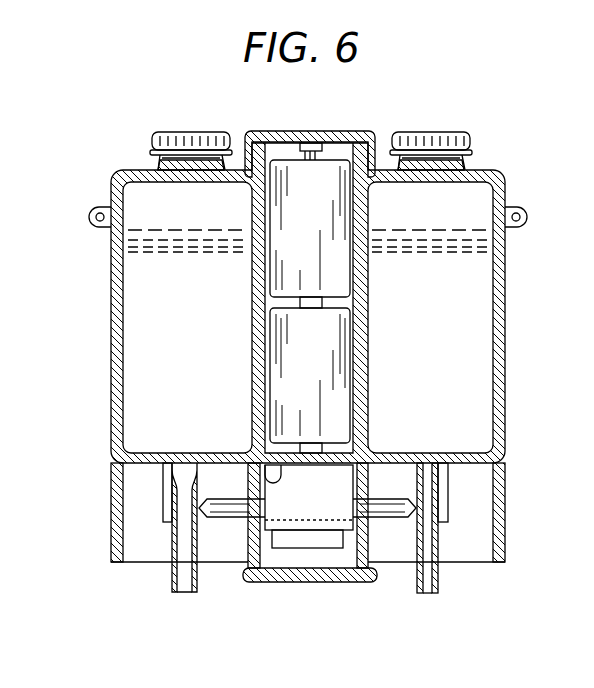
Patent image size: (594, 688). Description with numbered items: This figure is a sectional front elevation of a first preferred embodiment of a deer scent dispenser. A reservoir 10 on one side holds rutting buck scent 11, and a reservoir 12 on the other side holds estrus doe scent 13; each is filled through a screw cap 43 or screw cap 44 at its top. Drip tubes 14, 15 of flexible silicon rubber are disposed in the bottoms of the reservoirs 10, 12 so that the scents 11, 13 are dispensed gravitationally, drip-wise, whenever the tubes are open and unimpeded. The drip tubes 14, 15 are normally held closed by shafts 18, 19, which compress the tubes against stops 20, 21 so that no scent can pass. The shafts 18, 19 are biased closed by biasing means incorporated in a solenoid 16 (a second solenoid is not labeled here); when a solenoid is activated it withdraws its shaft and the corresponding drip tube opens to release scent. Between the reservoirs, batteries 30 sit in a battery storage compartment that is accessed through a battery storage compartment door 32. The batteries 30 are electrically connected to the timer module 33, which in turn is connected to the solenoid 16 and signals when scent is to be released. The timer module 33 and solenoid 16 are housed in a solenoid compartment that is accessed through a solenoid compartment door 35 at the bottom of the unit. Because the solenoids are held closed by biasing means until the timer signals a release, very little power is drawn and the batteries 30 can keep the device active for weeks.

The reservoir 10 is at (110, 167).
The rutting buck scent 11 is at (157, 378).
The reservoir 12 is at (506, 174).
The estrus doe scent 13 is at (470, 378).
The drip tube 14 is at (165, 590).
The drip tube 15 is at (438, 592).
The solenoid 16 is at (305, 520).
The shaft 18 is at (214, 520).
The shaft 19 is at (398, 520).
The stop 20 is at (158, 512).
The stop 21 is at (450, 505).
The batteries 30 is at (272, 142).
The battery storage compartment door 32 is at (338, 142).
The timer module 33 is at (345, 548).
The solenoid compartment door 35 is at (262, 583).
The screw cap 43 is at (180, 131).
The screw cap 44 is at (420, 131).